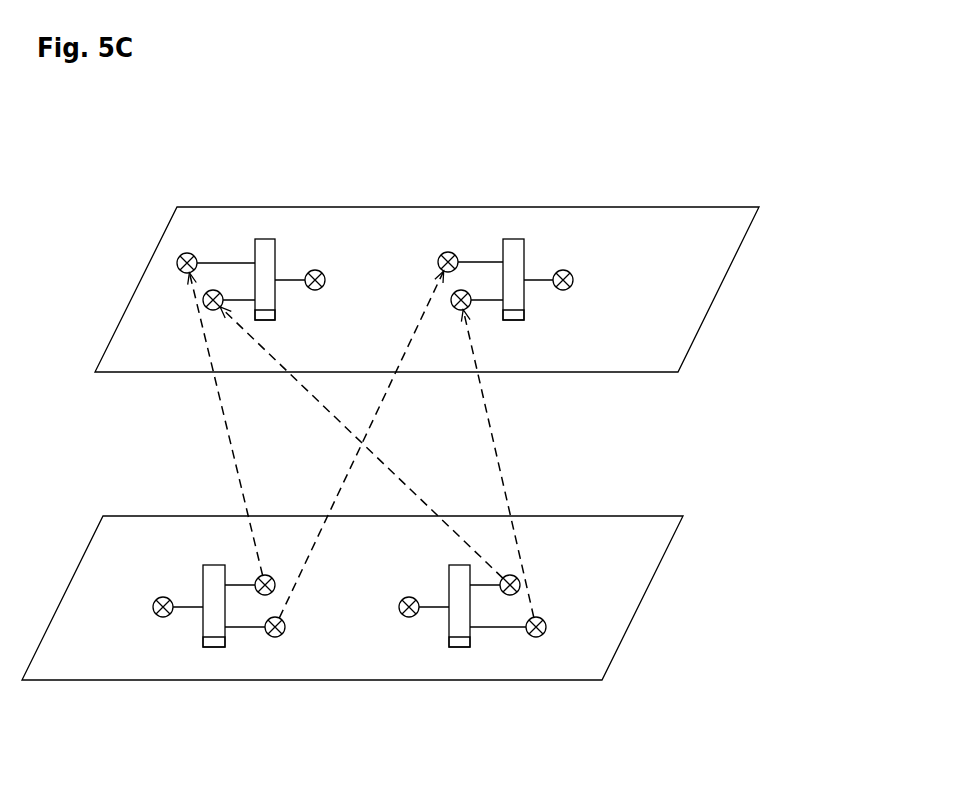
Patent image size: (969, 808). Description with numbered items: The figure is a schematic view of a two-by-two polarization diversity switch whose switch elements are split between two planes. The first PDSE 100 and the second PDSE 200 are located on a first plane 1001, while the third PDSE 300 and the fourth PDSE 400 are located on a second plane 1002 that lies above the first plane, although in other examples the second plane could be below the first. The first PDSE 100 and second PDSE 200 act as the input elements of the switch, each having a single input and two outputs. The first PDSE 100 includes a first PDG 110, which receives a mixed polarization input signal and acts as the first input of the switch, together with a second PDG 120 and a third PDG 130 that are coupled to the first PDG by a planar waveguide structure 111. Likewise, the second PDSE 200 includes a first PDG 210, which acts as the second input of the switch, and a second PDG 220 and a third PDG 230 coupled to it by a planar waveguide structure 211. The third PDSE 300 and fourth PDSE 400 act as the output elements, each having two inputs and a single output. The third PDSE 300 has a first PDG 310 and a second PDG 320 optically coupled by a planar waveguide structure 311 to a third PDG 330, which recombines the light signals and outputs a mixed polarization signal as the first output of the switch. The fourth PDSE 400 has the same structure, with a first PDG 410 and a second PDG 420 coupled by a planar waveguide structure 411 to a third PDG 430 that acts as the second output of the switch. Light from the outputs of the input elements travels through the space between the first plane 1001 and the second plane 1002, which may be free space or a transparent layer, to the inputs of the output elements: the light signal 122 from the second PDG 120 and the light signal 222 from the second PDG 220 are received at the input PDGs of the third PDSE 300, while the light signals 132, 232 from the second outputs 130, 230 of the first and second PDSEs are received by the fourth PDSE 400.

The first PDSE 100 is at (198, 667).
The first PDG 110 is at (162, 598).
The planar waveguide structure 111 is at (203, 645).
The second PDG 120 is at (267, 576).
The light signal 122 is at (224, 428).
The third PDG 130 is at (279, 637).
The light signal 132 is at (374, 424).
The second PDSE 200 is at (440, 670).
The first PDG 210 is at (408, 598).
The planar waveguide structure 211 is at (449, 639).
The second PDG 220 is at (506, 575).
The light signal 222 is at (343, 425).
The third PDG 230 is at (539, 637).
The light signal 232 is at (487, 418).
The third PDSE 300 is at (265, 213).
The first PDG 310 is at (189, 253).
The planar waveguide structure 311 is at (275, 321).
The second PDG 320 is at (220, 309).
The third PDG 330 is at (319, 271).
The fourth PDSE 400 is at (513, 213).
The first PDG 410 is at (449, 253).
The planar waveguide structure 411 is at (524, 321).
The second PDG 420 is at (467, 308).
The third PDG 430 is at (565, 271).
The first plane 1001 is at (460, 598).
The second plane 1002 is at (505, 289).